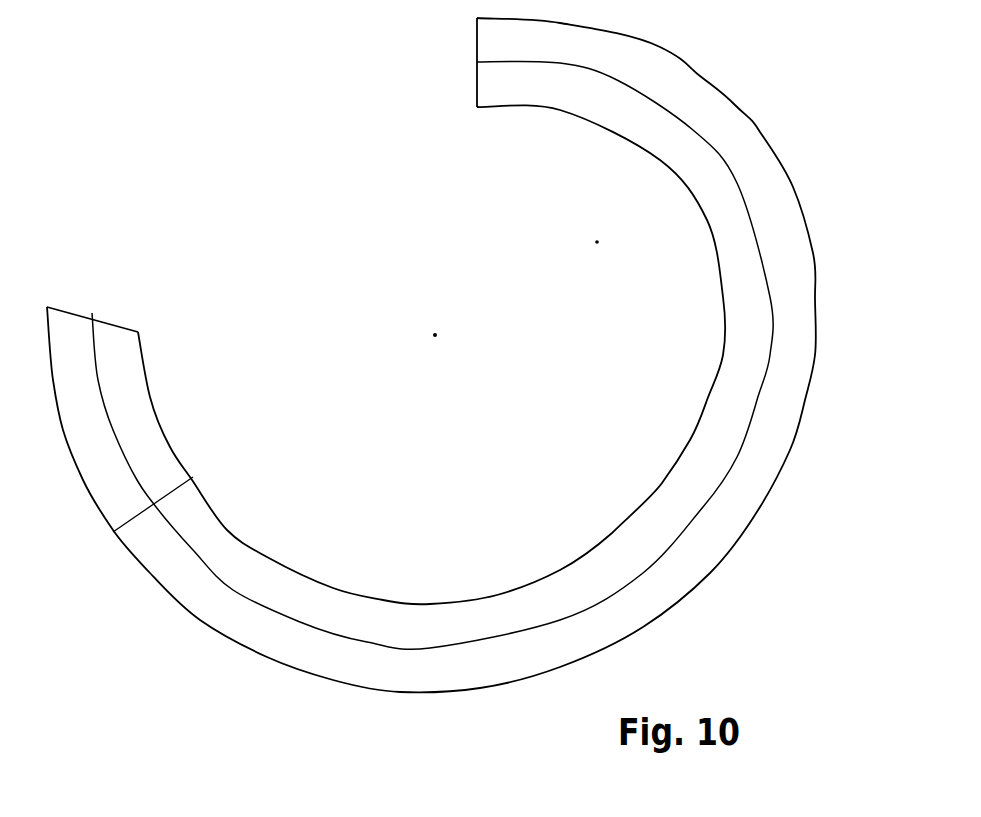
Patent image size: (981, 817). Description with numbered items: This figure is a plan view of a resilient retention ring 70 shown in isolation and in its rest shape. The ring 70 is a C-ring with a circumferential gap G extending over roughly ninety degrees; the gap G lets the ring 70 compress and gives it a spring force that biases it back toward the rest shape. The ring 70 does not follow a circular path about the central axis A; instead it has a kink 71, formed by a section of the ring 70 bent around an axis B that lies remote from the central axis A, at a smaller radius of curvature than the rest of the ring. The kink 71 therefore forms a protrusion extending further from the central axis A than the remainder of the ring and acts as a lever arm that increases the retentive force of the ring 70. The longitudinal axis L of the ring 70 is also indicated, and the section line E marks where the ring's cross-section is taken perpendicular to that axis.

The resilient retention ring 70 is at (473, 355).
The kink 71 is at (762, 128).
The circumferential gap G is at (442, 65).
The longitudinal axis L is at (100, 312).
The section line E- E is at (148, 512).
The central axis A is at (458, 328).
The axis B is at (612, 273).